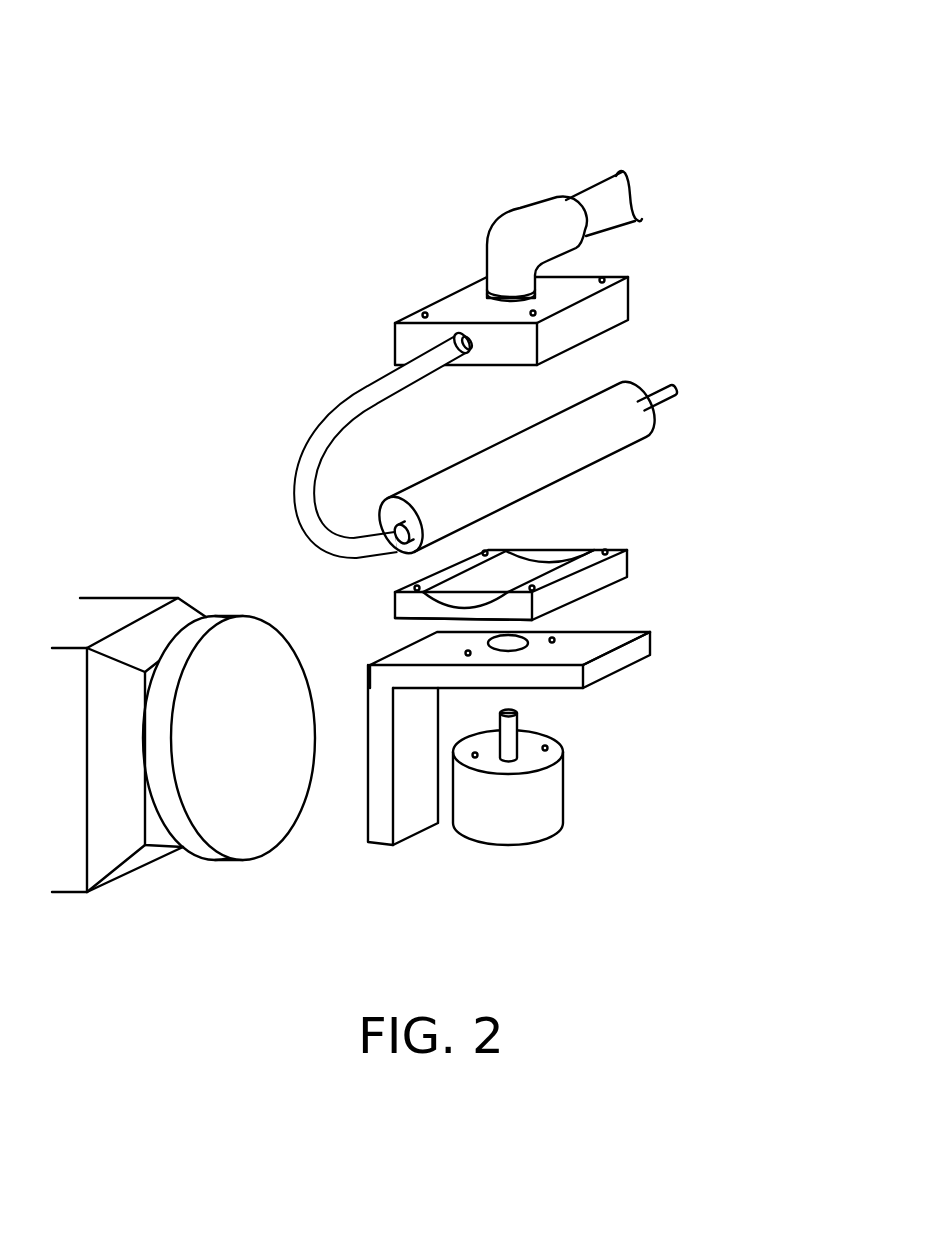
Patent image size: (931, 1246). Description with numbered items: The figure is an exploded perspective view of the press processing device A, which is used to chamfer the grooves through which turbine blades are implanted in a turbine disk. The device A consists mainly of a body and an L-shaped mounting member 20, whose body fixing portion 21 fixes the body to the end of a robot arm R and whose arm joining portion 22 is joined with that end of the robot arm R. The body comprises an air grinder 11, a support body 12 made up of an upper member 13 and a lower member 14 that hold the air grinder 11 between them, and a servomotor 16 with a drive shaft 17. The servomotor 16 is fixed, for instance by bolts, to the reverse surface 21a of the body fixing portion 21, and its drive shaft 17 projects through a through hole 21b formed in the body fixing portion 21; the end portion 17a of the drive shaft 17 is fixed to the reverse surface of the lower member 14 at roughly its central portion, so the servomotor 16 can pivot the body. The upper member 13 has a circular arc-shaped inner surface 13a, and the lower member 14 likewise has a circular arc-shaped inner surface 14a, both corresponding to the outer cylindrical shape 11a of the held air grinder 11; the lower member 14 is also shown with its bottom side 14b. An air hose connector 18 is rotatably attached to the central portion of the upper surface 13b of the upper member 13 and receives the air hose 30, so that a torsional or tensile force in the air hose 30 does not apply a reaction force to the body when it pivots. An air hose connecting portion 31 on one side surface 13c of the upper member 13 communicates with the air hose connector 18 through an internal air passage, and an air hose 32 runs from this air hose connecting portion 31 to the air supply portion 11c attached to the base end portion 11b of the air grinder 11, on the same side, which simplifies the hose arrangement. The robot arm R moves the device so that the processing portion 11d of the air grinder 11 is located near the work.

The press processing device A is at (788, 41).
The robot arm R is at (135, 594).
The air grinder 11 is at (618, 455).
The outer cylindrical shape 11a is at (630, 380).
The base end portion 11b is at (402, 494).
The air supply portion 11c is at (386, 556).
The processing portion 11d is at (673, 397).
The support body 12 is at (503, 382).
The upper member 13 is at (605, 275).
The circular arc-shaped inner surface 13a is at (480, 357).
The upper surface 13b is at (442, 305).
The side surface 13c is at (392, 345).
The lower member 14 is at (628, 556).
The circular arc-shaped inner surface 14a is at (540, 557).
The block bottom face 14b is at (395, 614).
The servomotor 16 is at (555, 800).
The drive shaft 17 is at (520, 745).
The end portion 17a is at (518, 718).
The air hose connector 18 is at (530, 207).
The L-shaped mounting member 20 is at (420, 840).
The body fixing portion 21 is at (647, 646).
The reverse surface 21a is at (640, 668).
The through hole 21b is at (530, 643).
The arm joining portion 22 is at (383, 832).
The air hose 30 is at (595, 183).
The air hose connecting portion 31 is at (464, 330).
The air hose 32 is at (322, 428).